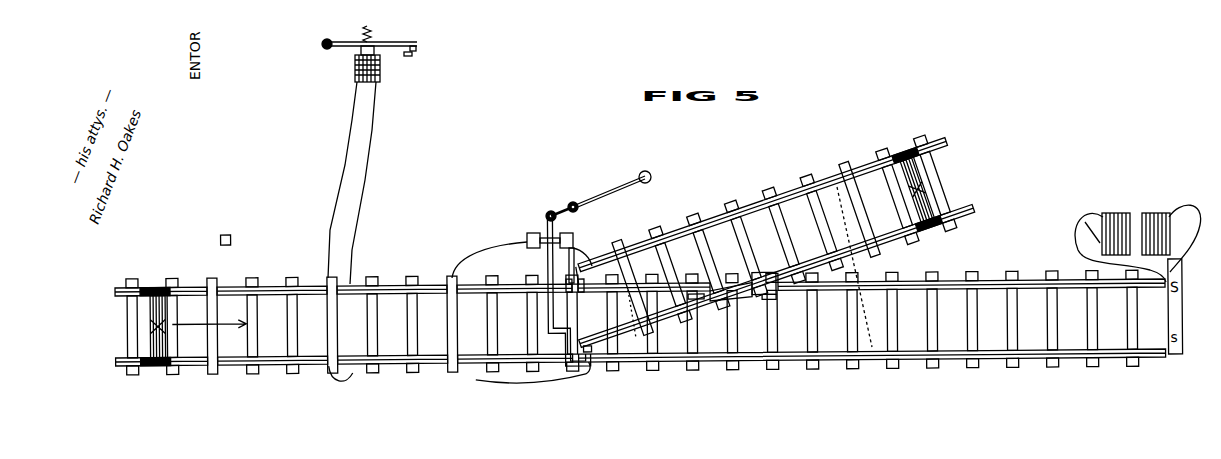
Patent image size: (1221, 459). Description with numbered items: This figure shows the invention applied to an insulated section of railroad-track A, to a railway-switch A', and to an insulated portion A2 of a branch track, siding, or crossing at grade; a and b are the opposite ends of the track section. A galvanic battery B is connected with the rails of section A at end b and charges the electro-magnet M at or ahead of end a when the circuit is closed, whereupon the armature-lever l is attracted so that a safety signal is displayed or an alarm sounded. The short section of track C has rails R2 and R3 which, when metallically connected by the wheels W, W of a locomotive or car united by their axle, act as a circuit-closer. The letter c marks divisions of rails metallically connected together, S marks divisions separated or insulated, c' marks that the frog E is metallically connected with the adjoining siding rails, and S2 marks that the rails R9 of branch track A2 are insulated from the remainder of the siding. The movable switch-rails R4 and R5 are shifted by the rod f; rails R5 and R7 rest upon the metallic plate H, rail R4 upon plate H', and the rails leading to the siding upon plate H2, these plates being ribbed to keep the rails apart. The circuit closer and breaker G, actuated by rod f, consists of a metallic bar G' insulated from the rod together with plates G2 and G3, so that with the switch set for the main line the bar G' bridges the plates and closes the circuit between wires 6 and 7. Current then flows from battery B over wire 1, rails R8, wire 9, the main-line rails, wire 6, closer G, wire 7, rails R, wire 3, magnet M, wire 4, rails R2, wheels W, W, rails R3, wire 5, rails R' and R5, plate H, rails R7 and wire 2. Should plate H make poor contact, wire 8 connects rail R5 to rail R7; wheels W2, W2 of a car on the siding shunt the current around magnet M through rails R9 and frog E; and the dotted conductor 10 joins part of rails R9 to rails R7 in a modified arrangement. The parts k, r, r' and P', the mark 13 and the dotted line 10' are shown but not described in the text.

The wire 1 is at (1186, 238).
The wire 2 is at (1120, 273).
The wire 3 is at (366, 183).
The wire 4 is at (342, 180).
The wire 5 is at (341, 378).
The wire 6 is at (611, 259).
The wire 7 is at (489, 256).
The wire 8 is at (533, 375).
The wire 9 is at (763, 262).
The wire 10 is at (631, 314).
The connection line 10' is at (859, 267).
The rail joint 13 is at (598, 343).
The insulated section of railroad-track A is at (753, 325).
The railway-switch A' is at (510, 327).
The insulated portion of branch track or siding A2 is at (722, 239).
The galvanic battery B is at (1141, 220).
The end of track section b is at (1185, 306).
The short section of track C is at (227, 325).
The metallic connection mark c is at (455, 324).
The frog connection mark c' is at (735, 281).
The frog E is at (743, 286).
The rod f is at (609, 190).
The circuit closer and breaker G is at (547, 215).
The metallic bar or conductor G' is at (566, 249).
The plate or conductor G2 is at (534, 241).
The plate or conductor G3 is at (576, 241).
The metallic plate H is at (568, 290).
The plate H' is at (573, 295).
The plate H2 is at (587, 295).
The spring k is at (376, 34).
The armature-lever l is at (369, 38).
The electro-magnet M is at (359, 64).
The post P' is at (234, 243).
The rails R is at (524, 301).
The rails R' is at (393, 369).
The rail of short section C R2 is at (272, 281).
The rail of short section C R3 is at (273, 370).
The movable switch-rail R4 is at (514, 279).
The movable switch-rail R5 is at (515, 368).
The main-line rails R7 is at (872, 365).
The rails R8 is at (971, 271).
The rails of branch track R9 is at (771, 239).
The insulation mark S is at (215, 326).
The insulation mark S2 is at (746, 248).
The wheels W is at (155, 330).
The wheels W2 is at (920, 184).
The end of track section a is at (336, 325).
The contact r is at (417, 38).
The contact r' is at (415, 57).